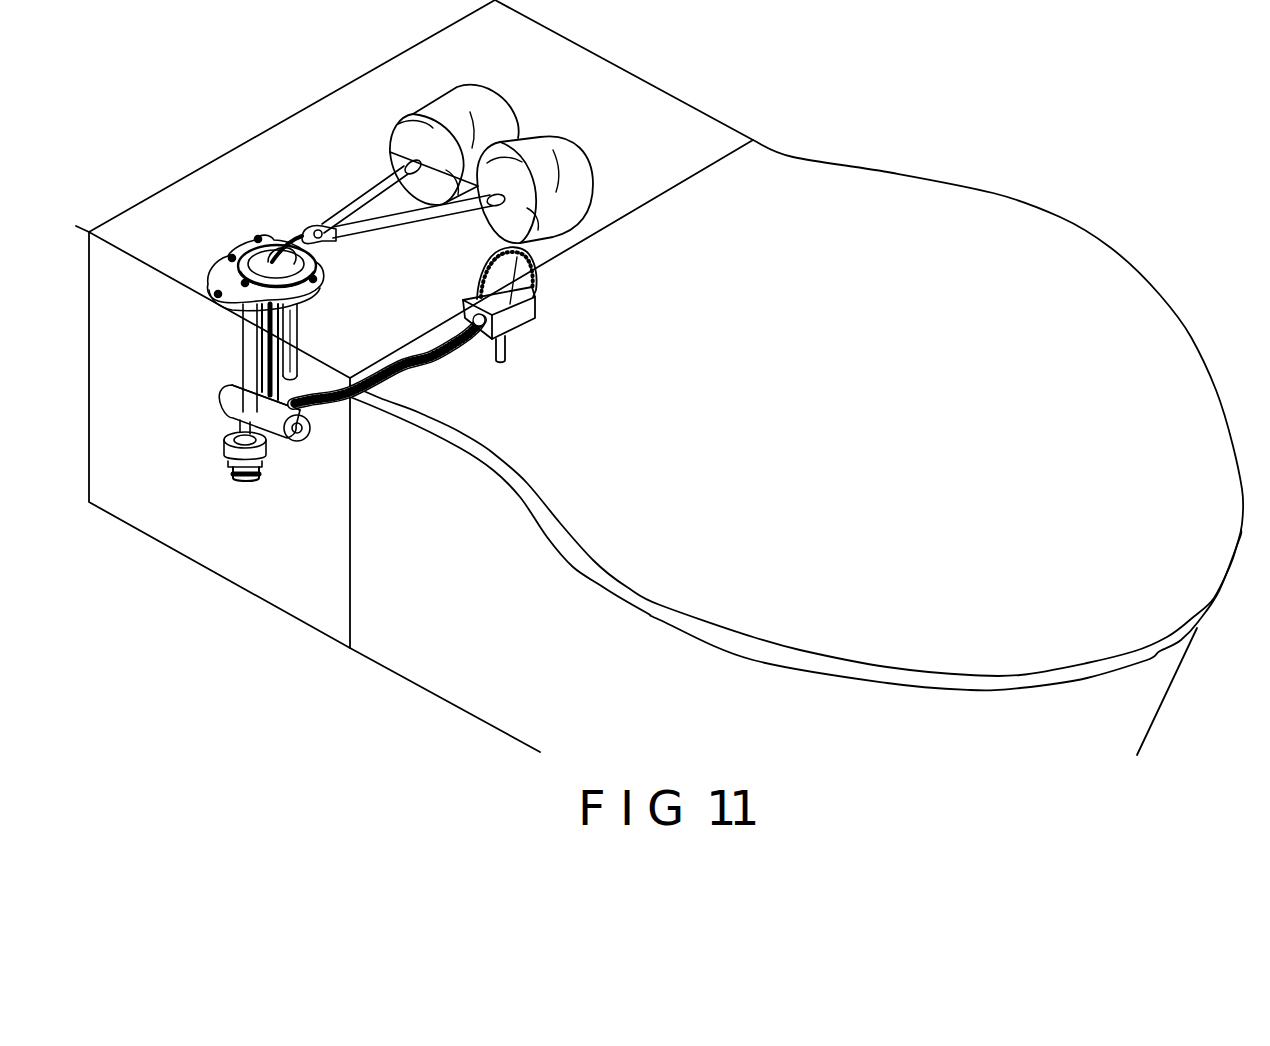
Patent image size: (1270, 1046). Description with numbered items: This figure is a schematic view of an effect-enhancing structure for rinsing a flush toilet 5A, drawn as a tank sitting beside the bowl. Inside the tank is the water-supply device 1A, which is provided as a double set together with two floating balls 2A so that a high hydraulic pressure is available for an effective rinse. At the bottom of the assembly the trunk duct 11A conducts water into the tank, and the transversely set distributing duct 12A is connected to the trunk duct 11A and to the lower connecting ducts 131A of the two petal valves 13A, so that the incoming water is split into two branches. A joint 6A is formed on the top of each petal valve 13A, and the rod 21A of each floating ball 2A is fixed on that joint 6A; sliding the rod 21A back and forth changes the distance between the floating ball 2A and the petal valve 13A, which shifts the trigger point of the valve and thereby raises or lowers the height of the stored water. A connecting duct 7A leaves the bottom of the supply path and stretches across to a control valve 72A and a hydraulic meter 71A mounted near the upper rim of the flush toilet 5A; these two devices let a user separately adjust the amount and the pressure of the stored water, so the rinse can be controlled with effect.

The water-supply device 1A is at (263, 560).
The floating ball 2A is at (487, 112).
The rod 21A is at (370, 190).
The flush toilet 5A is at (943, 405).
The joint 6A is at (294, 243).
The connecting duct 7A is at (423, 372).
The trunk duct 11A is at (232, 457).
The distributing duct 12A is at (227, 400).
The petal valve 13A is at (240, 256).
The lower connecting duct 131A is at (248, 340).
The hydraulic meter 71A is at (534, 270).
The control valve 72A is at (523, 313).